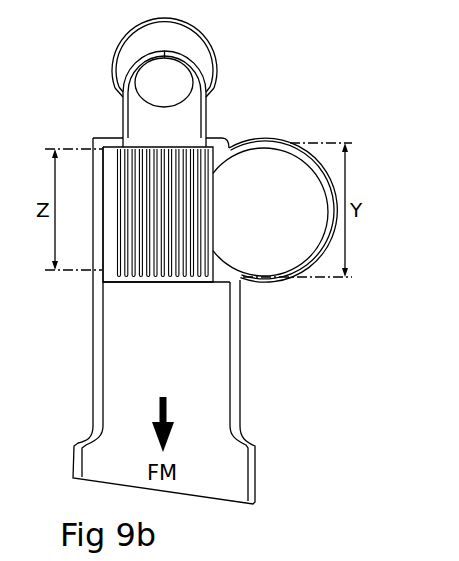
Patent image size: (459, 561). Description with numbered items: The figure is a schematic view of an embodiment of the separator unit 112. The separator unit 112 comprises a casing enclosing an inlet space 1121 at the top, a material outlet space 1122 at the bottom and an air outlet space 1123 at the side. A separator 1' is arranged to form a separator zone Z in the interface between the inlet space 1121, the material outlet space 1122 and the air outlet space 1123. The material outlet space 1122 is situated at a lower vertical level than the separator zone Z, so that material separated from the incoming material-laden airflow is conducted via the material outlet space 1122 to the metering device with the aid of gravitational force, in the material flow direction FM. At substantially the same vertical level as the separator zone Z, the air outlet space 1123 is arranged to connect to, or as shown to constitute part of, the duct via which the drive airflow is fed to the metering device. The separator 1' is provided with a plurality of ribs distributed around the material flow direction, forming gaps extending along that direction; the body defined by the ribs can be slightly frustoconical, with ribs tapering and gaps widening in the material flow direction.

The separator unit 112 is at (272, 377).
The separator 1' is at (126, 180).
The inlet space 1121 is at (188, 131).
The material outlet space 1122 is at (192, 383).
The air outlet space 1123 is at (288, 221).